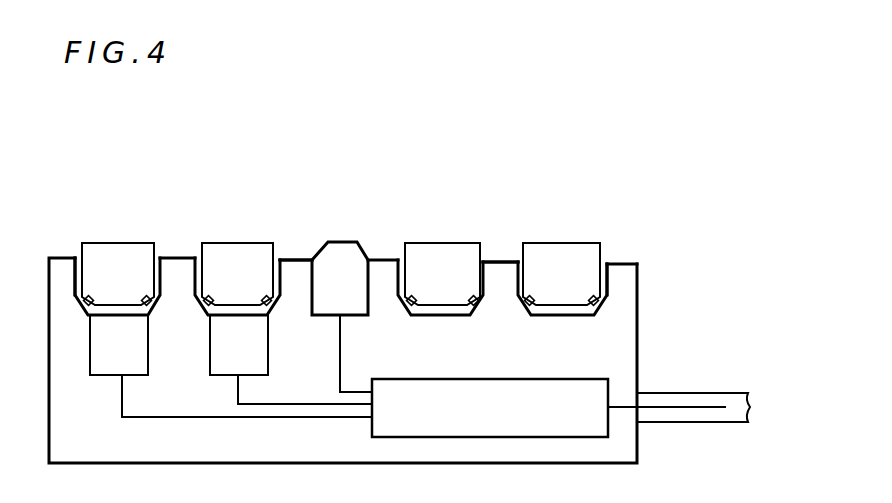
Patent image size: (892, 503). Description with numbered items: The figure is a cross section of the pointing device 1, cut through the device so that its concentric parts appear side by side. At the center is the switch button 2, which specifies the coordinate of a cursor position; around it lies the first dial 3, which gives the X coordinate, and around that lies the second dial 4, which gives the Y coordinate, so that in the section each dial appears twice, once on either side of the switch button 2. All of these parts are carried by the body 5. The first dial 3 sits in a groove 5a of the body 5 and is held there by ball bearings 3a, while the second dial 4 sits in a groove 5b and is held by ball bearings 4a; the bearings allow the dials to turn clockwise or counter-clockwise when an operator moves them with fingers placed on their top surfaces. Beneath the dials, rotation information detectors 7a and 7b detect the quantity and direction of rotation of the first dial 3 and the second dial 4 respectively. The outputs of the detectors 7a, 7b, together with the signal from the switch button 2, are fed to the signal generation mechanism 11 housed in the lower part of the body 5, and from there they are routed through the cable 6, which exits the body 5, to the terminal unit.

The pointing device 1 is at (641, 316).
The switch button 2 is at (352, 255).
The first dial 3 is at (248, 260).
The ball bearings 3a is at (212, 297).
The second dial 4 is at (121, 306).
The ball bearings 4a is at (93, 293).
The body 5 is at (626, 282).
The groove 5a is at (291, 243).
The groove 5b is at (609, 257).
The cable 6 is at (685, 393).
The rotation information detector 7a is at (268, 350).
The rotation information detector 7b is at (140, 350).
The signal generation mechanism 11 is at (594, 390).